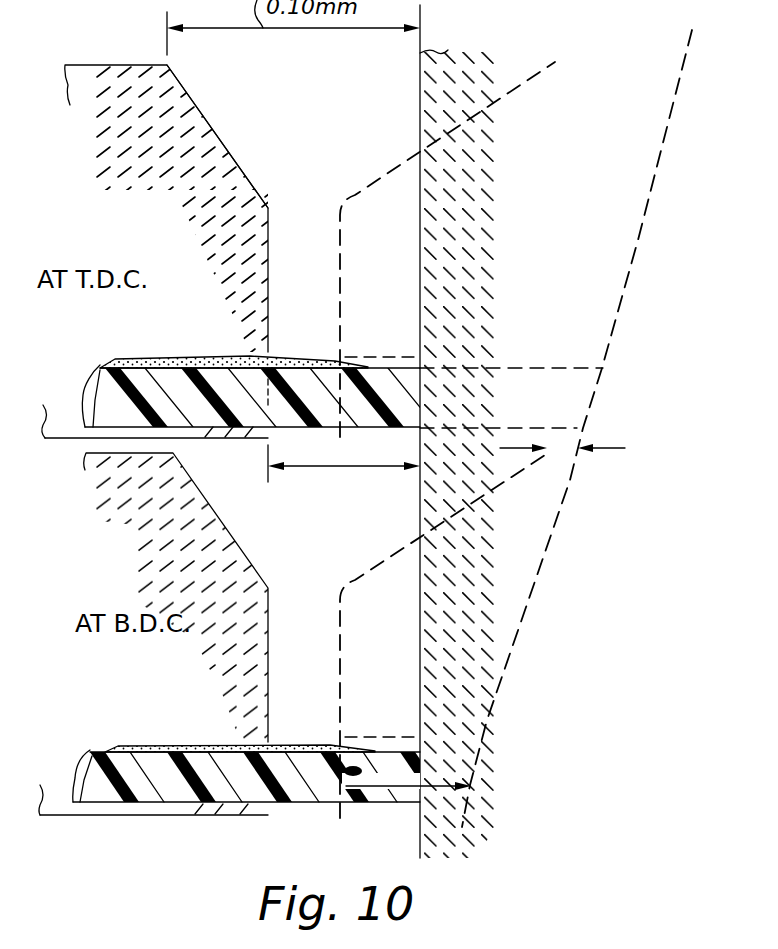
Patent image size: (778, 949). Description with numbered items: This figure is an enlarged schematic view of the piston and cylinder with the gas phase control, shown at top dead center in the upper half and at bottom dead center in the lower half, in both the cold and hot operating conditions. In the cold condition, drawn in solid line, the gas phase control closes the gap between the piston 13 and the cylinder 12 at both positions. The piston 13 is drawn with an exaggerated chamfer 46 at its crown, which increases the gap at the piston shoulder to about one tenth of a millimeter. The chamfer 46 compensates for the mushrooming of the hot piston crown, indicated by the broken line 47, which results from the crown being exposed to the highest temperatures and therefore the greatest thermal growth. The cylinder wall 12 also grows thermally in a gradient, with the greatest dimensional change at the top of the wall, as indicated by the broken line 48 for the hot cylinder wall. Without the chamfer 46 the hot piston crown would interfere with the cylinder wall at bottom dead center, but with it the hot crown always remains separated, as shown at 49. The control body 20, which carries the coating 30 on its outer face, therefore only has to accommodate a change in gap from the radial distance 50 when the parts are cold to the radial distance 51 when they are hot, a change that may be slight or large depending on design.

The cylinder 12 is at (438, 107).
The piston 13 is at (153, 128).
The control body 20 is at (237, 400).
The wear-resistant coating layer 30 is at (103, 358).
The chamfer 46 is at (207, 120).
The broken line of the hot piston 47 is at (510, 100).
The broken line for the hot cylinder wall 48 is at (646, 218).
The separation of the hot piston crown 49 is at (605, 447).
The radial distance when cold 50 is at (330, 468).
The radial distance when hot 51 is at (400, 788).